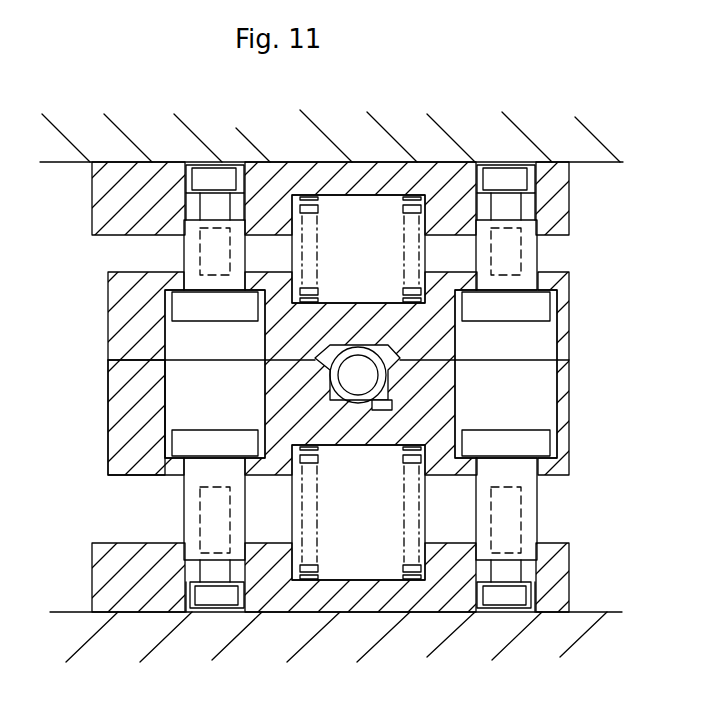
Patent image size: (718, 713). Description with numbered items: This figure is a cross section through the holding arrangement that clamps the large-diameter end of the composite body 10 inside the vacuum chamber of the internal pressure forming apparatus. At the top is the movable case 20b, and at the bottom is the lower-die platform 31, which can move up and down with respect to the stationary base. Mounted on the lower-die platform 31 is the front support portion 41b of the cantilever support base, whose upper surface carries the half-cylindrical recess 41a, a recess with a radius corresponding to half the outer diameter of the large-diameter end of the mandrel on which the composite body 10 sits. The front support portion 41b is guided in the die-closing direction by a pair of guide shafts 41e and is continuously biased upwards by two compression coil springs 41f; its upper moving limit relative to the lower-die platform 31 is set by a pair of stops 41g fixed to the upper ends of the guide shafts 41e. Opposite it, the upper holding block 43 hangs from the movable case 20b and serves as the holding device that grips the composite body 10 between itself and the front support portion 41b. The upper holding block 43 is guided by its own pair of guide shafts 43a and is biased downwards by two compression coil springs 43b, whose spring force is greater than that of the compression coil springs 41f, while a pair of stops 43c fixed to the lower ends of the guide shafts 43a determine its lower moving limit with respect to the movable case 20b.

The composite body 10 is at (388, 373).
The movable case 20b is at (590, 162).
The lower-die platform 31 is at (593, 613).
The half-cylindrical recess 41a is at (392, 407).
The front support portion 41b is at (122, 387).
The guide shafts 41e is at (192, 513).
The compression coil springs 41f is at (398, 567).
The stops 41g is at (170, 443).
The upper holding block 43 is at (110, 302).
The guide shafts 43a is at (185, 253).
The compression coil springs 43b is at (425, 195).
The stops 43c is at (177, 314).